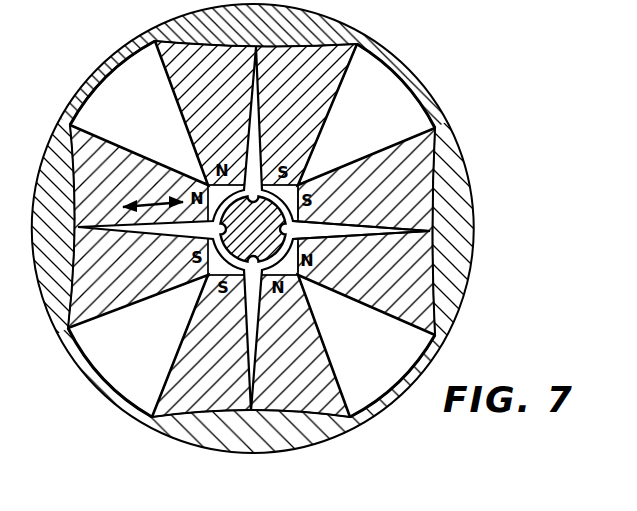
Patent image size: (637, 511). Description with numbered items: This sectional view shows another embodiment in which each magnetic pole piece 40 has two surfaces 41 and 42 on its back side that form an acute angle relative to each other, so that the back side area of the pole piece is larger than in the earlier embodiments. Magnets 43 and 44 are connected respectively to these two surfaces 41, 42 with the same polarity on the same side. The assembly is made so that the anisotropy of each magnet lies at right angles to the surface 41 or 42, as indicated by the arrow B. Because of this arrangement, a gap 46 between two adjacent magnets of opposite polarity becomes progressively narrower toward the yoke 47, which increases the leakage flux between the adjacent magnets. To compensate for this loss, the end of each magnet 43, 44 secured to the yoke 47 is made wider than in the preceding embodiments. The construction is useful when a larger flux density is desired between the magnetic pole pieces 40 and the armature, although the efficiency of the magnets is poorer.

The magnetic pole piece 40 is at (302, 178).
The surface 41 is at (266, 182).
The surface 42 is at (311, 210).
The magnet 43 is at (327, 77).
The magnet 44 is at (387, 160).
The gap 46 is at (338, 232).
The yoke 47 is at (396, 62).
The arrow B is at (157, 199).